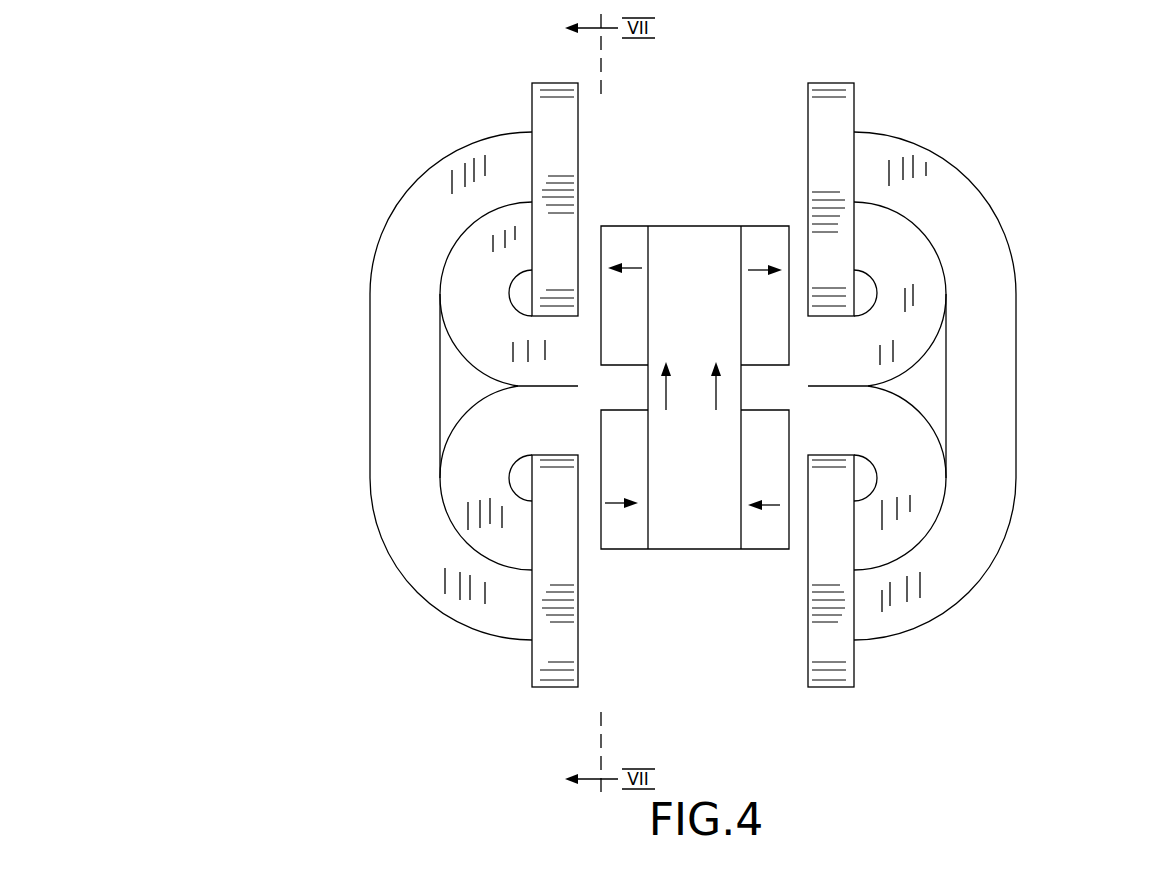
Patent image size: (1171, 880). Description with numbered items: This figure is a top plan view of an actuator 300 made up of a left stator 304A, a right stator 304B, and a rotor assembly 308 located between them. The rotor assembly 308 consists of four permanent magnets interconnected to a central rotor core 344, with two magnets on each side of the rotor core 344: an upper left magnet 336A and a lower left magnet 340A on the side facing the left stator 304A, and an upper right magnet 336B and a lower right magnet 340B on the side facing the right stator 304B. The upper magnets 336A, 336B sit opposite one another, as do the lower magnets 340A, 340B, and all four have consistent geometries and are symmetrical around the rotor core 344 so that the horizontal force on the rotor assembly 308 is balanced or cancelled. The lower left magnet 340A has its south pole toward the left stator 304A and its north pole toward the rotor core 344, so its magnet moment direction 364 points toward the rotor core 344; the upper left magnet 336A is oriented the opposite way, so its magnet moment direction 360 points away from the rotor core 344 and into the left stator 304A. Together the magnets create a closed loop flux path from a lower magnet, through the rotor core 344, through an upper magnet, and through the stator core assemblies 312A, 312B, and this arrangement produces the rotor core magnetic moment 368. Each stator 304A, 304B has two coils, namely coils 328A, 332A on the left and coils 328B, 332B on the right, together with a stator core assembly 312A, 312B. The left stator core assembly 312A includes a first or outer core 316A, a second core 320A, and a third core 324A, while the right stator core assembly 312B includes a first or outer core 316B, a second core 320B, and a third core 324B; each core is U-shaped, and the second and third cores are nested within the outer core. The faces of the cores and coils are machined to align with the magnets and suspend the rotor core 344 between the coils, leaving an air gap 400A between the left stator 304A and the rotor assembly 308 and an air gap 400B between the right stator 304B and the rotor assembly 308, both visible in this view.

The actuator 300 is at (1010, 108).
The left stator 304A is at (498, 673).
The right stator 304B is at (937, 676).
The rotor assembly 308 is at (689, 592).
The left stator core assembly 312A is at (345, 378).
The right stator core assembly 312B is at (1054, 326).
The first or outer core 316A is at (445, 230).
The first or outer core 316B is at (937, 230).
The second core 320A is at (502, 294).
The second core 320B is at (870, 267).
The third core 324A is at (502, 467).
The third core 324B is at (864, 449).
The coil 328A is at (551, 100).
The coil 328B is at (838, 102).
The coil 332A is at (553, 677).
The coil 332B is at (835, 688).
The upper left magnet 336A is at (627, 240).
The upper right magnet 336B is at (768, 240).
The lower left magnet 340A is at (620, 530).
The lower right magnet 340B is at (772, 540).
The rotor core 344 is at (712, 240).
The magnet moment direction 360 is at (634, 260).
The magnet moment direction 364 is at (760, 512).
The rotor core magnetic moment 368 is at (656, 393).
The air gap 400A is at (591, 228).
The air gap 400B is at (800, 556).